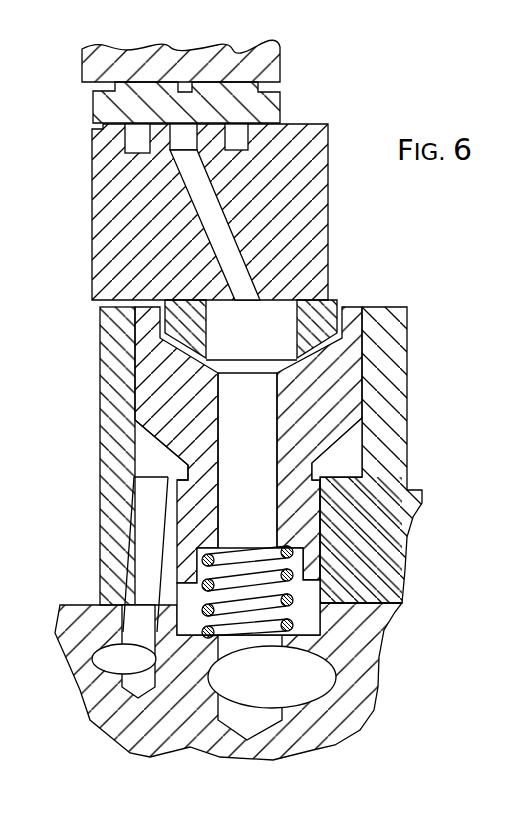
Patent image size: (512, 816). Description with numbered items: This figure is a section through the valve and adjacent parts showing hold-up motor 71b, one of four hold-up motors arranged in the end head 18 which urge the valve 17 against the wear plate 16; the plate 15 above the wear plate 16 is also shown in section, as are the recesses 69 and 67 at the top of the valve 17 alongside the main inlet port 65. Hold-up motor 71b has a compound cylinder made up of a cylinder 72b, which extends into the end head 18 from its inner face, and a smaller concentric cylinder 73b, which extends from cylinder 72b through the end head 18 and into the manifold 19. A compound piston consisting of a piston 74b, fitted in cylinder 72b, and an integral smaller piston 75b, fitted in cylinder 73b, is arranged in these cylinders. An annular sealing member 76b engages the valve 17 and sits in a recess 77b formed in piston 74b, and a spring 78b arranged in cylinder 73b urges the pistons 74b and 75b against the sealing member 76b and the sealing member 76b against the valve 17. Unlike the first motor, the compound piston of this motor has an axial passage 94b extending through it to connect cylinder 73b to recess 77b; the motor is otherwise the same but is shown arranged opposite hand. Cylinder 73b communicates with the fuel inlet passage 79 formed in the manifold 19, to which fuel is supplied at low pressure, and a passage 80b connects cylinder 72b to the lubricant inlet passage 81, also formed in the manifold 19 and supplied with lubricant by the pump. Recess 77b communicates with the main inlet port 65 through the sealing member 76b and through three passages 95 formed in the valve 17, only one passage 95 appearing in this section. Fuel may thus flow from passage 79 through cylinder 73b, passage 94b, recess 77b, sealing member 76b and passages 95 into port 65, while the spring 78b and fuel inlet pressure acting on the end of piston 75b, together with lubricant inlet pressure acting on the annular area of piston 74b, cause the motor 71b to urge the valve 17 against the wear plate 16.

The upper plate 15 is at (93, 69).
The wear plate 16 is at (113, 107).
The valve 17 is at (92, 236).
The recess 69 is at (138, 140).
The main inlet port 65 is at (192, 138).
The recess 67 is at (238, 138).
The passages 95 is at (253, 284).
The end head 18 is at (112, 360).
The piston 74b is at (352, 388).
The cylinder 72b is at (347, 462).
The annular sealing member 76b is at (320, 318).
The recess 77b is at (264, 349).
The axial passage 94b is at (262, 471).
The hold-up motor 71b is at (79, 438).
The piston 75b is at (313, 553).
The manifold 19 is at (112, 717).
The cylinder 73b is at (307, 595).
The spring 78b is at (243, 630).
The passage 80b is at (140, 568).
The lubricant inlet passage 81 is at (108, 663).
The fuel inlet passage 79 is at (325, 684).